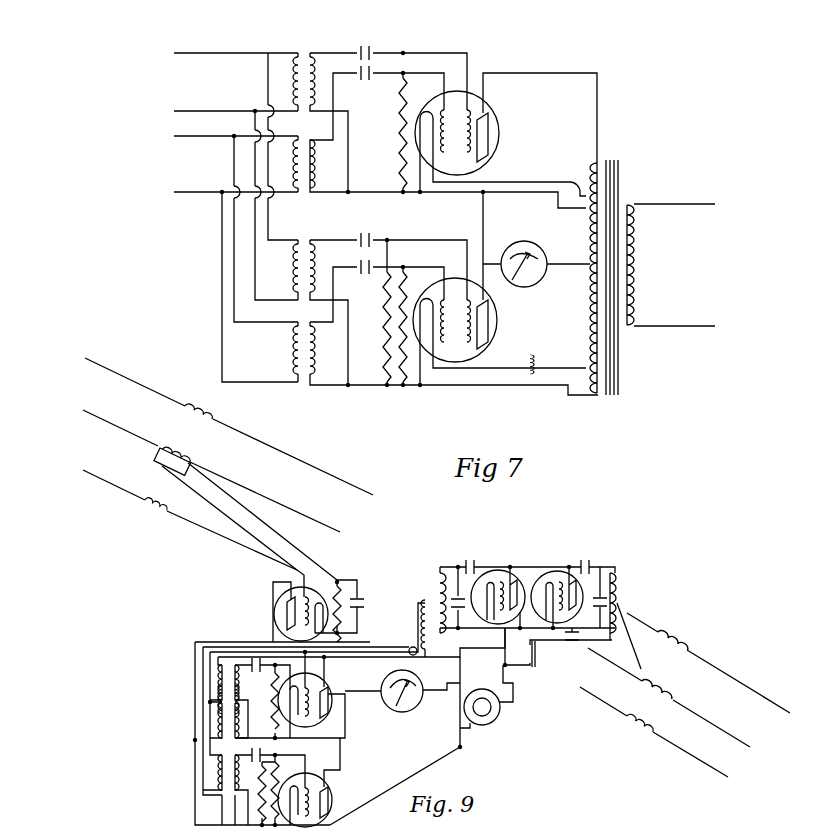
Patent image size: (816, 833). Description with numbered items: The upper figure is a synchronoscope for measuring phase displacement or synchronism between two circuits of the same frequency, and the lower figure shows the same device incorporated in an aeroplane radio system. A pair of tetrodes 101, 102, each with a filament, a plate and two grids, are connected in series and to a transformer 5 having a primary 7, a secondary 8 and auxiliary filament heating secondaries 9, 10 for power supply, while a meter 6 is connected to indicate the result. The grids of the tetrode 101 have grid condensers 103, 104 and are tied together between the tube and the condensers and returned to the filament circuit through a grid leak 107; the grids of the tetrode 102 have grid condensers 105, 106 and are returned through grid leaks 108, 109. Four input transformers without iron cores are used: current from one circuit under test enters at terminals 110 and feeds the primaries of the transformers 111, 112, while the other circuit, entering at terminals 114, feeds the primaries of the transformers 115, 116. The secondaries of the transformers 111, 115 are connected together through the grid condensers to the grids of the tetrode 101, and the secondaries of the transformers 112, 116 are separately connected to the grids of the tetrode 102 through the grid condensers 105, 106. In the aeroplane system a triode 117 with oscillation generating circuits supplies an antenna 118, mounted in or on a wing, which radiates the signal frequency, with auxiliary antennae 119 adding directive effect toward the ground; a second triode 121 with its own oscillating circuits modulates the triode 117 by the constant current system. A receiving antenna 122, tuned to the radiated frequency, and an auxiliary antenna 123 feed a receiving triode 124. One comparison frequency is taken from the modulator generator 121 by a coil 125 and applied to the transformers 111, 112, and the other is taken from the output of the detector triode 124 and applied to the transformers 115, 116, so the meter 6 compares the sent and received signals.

In FIG. 7, the transformer 5 is at (620, 150).
In FIG. 7, the meter 6 is at (528, 287).
In FIG. 7, the primary 7 is at (637, 258).
In FIG. 7, the secondary 8 is at (588, 291).
In FIG. 7, the auxiliary filament heating secondary 9 is at (574, 191).
In FIG. 7, the auxiliary filament heating secondary 10 is at (580, 370).
In FIG. 7, the tetrode 101 is at (492, 126).
In FIG. 7, the tetrode 102 is at (497, 318).
In FIG. 9, the tetrode 102 is at (328, 790).
In FIG. 7, the grid condenser 103 is at (370, 47).
In FIG. 7, the grid condenser 104 is at (369, 81).
In FIG. 7, the grid condenser 105 is at (371, 235).
In FIG. 7, the grid condenser 106 is at (366, 276).
In FIG. 7, the grid leak 107 is at (400, 133).
In FIG. 7, the grid leak 108 is at (399, 379).
In FIG. 7, the grid leak 109 is at (385, 376).
In FIG. 7, the terminals 110 is at (199, 60).
In FIG. 9, the terminals 110 is at (327, 692).
In FIG. 7, the transformer 111 is at (303, 55).
In FIG. 9, the transformer 111 is at (210, 681).
In FIG. 7, the transformer 112 is at (303, 239).
In FIG. 9, the transformer 112 is at (210, 784).
In FIG. 7, the input circuit 114 is at (199, 142).
In FIG. 7, the transformer 115 is at (308, 153).
In FIG. 9, the transformer 115 is at (195, 740).
In FIG. 7, the transformer 116 is at (299, 386).
In FIG. 9, the transformer 116 is at (210, 814).
In FIG. 9, the triode 117 is at (562, 572).
In FIG. 9, the antenna 118 is at (744, 745).
In FIG. 9, the auxiliary antennae 119 is at (774, 713).
In FIG. 9, the triode 121 is at (496, 572).
In FIG. 9, the receiving antenna 122 is at (101, 421).
In FIG. 9, the auxiliary antenna 123 is at (102, 362).
In FIG. 9, the receiving triode 124 is at (276, 615).
In FIG. 9, the coil 125 is at (421, 603).